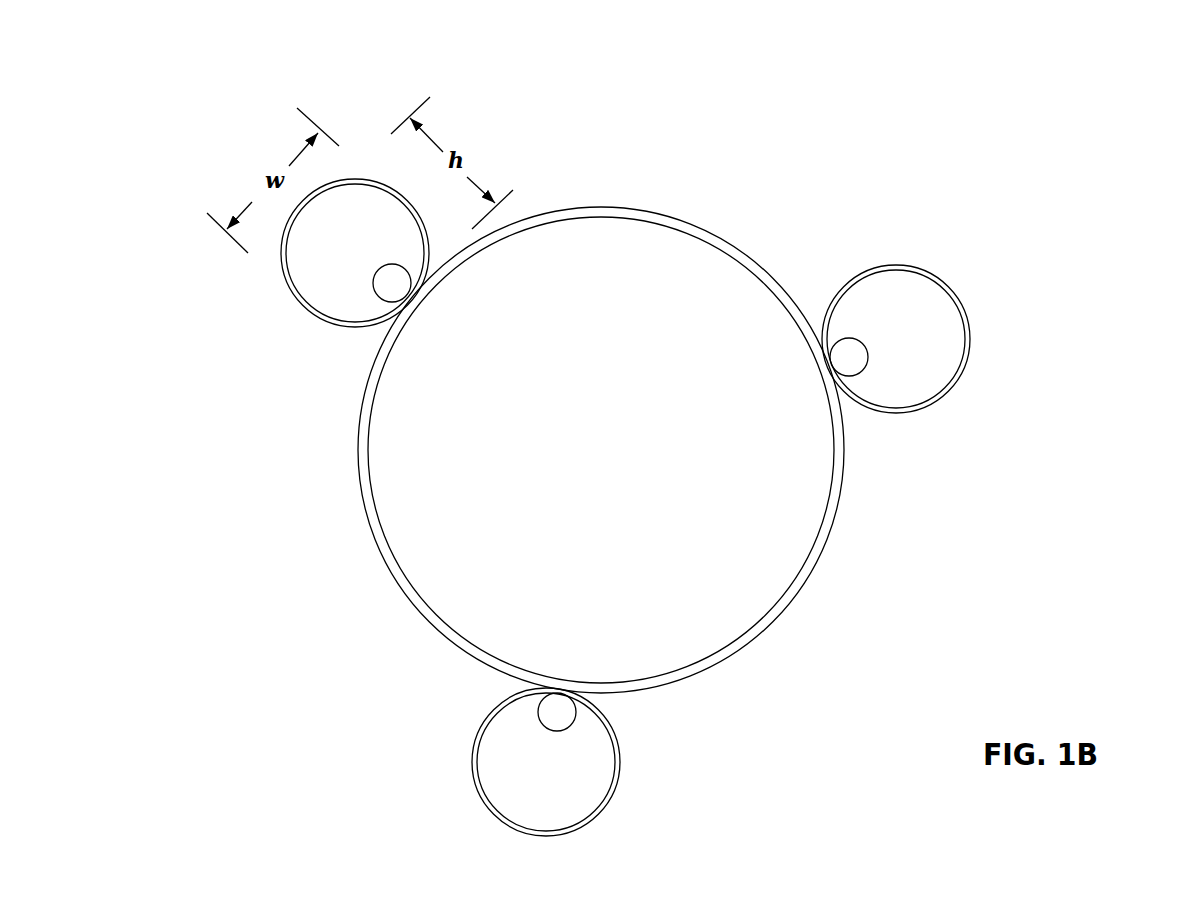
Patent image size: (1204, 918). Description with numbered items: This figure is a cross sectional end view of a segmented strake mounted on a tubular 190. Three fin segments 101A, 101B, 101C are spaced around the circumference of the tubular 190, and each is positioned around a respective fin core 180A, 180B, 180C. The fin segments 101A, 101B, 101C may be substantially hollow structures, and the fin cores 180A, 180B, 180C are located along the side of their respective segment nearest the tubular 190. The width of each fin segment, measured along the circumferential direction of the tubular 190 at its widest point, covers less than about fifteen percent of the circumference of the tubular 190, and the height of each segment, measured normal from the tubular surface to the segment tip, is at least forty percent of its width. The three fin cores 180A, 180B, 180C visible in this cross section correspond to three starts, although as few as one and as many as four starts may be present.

The tubular 190 is at (717, 235).
The fin segment 101A is at (962, 302).
The fin segment 101B is at (361, 177).
The fin segment 101C is at (467, 757).
The fin core 180A is at (865, 376).
The fin core 180B is at (378, 302).
The fin core 180C is at (582, 725).